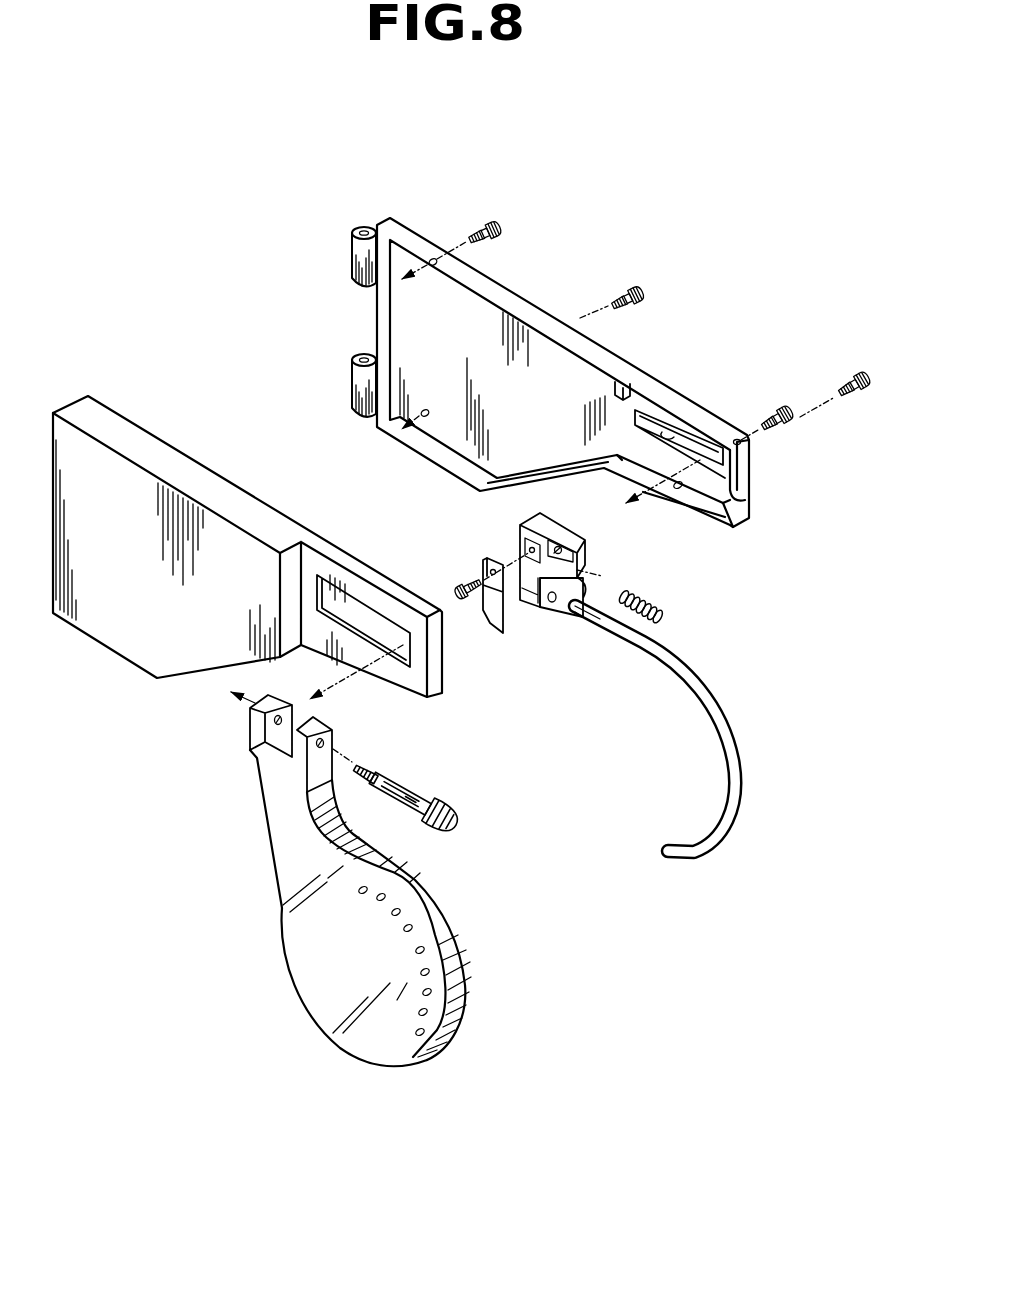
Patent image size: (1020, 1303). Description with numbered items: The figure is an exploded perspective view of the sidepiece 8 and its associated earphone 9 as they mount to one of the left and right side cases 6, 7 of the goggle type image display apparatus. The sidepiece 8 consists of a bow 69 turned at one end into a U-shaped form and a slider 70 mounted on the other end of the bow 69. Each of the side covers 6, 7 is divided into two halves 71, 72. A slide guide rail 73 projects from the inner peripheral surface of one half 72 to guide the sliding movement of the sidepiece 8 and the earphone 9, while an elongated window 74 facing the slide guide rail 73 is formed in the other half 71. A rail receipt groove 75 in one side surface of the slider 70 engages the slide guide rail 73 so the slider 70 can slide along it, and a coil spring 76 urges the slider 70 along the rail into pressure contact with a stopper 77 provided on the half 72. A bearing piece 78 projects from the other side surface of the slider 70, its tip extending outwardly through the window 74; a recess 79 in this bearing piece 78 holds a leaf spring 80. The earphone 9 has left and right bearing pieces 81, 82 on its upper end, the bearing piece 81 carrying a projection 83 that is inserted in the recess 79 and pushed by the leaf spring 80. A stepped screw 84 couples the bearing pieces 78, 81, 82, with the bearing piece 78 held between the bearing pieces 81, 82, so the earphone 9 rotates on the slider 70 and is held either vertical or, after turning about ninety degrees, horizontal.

The side case 6 is at (187, 245).
The side case 7 is at (462, 458).
The sidepiece 8 is at (653, 738).
The earphone 9 is at (298, 948).
The bow 69 is at (645, 652).
The slider 70 is at (573, 622).
The half 71 is at (167, 436).
The half 72 is at (364, 320).
The slide guide rail 73 is at (663, 433).
The elongated window 74 is at (355, 614).
The rail receipt groove 75 is at (664, 630).
The coil spring 76 is at (664, 612).
The stopper 77 is at (627, 392).
The bearing piece 78 is at (505, 618).
The recess 79 is at (522, 543).
The leaf spring 80 is at (483, 568).
The bearing piece 81 is at (250, 723).
The bearing piece 82 is at (273, 755).
The projection 83 is at (292, 702).
The stepped screw 84 is at (413, 787).